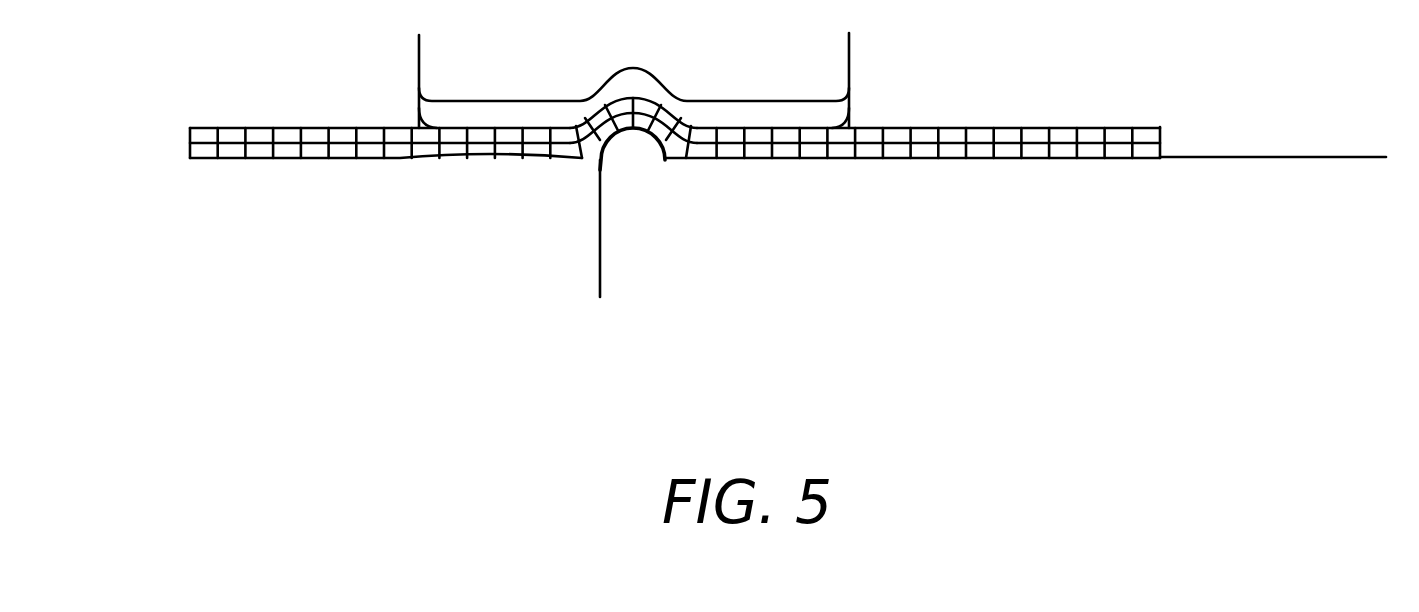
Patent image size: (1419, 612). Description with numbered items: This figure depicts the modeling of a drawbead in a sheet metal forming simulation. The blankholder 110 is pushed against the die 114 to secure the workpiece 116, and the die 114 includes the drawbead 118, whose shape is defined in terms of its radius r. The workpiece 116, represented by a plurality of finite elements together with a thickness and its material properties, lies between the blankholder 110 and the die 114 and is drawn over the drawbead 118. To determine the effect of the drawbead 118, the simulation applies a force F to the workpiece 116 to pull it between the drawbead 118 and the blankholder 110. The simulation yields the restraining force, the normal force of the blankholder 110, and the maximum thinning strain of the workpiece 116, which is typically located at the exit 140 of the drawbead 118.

The blankholder 110 is at (765, 36).
The die 114 is at (1243, 156).
The workpiece 116 is at (980, 136).
The drawbead 118 is at (603, 143).
The exit of the drawbead 140 is at (441, 163).
The force F is at (87, 145).
The radius r is at (640, 131).